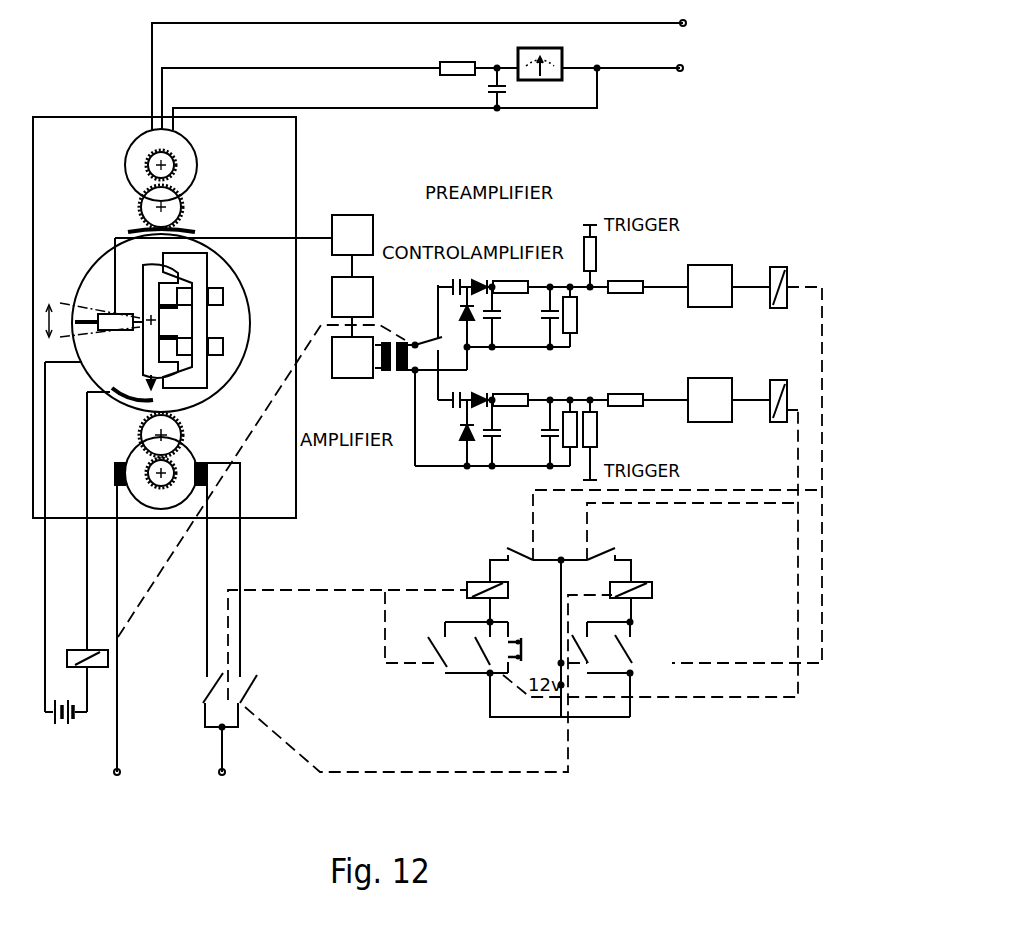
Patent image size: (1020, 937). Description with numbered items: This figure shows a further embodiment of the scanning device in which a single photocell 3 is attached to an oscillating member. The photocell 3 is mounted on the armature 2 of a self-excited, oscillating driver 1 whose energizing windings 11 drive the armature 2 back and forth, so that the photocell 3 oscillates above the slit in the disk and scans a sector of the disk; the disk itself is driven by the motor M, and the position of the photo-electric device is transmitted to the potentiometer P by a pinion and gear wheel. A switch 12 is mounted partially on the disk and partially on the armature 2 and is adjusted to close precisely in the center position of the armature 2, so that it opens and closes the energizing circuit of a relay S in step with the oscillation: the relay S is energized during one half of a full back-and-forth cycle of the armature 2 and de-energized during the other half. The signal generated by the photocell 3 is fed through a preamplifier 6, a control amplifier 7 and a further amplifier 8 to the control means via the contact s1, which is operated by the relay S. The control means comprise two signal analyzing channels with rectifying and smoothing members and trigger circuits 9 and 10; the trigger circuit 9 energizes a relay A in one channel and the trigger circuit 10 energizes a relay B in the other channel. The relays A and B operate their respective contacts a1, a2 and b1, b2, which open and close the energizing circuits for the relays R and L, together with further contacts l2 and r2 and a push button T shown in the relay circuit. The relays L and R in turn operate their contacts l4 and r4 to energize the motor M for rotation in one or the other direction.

The self-excited oscillating driver 1 is at (200, 266).
The armature 2 is at (148, 282).
The photocell 3 is at (112, 323).
The preamplifier 6 is at (373, 222).
The control amplifier 7 is at (375, 292).
The further amplifier 8 is at (363, 380).
The trigger circuit 9 is at (705, 265).
The trigger circuit 10 is at (708, 425).
The energizing windings 11 is at (223, 296).
The switch 12 is at (157, 395).
The potentiometer P is at (189, 158).
The motor M is at (160, 505).
The relay S is at (80, 650).
The relay L is at (477, 582).
The relay R is at (641, 582).
The relay A is at (775, 267).
The relay B is at (778, 427).
The contact s1 is at (430, 338).
The contact a1 is at (633, 652).
The contact a2 is at (511, 555).
The contact b1 is at (480, 665).
The contact b2 is at (609, 555).
The contact l2 is at (437, 652).
The contact r2 is at (590, 649).
The contact l4 is at (205, 693).
The contact r4 is at (256, 690).
The push button T is at (526, 627).